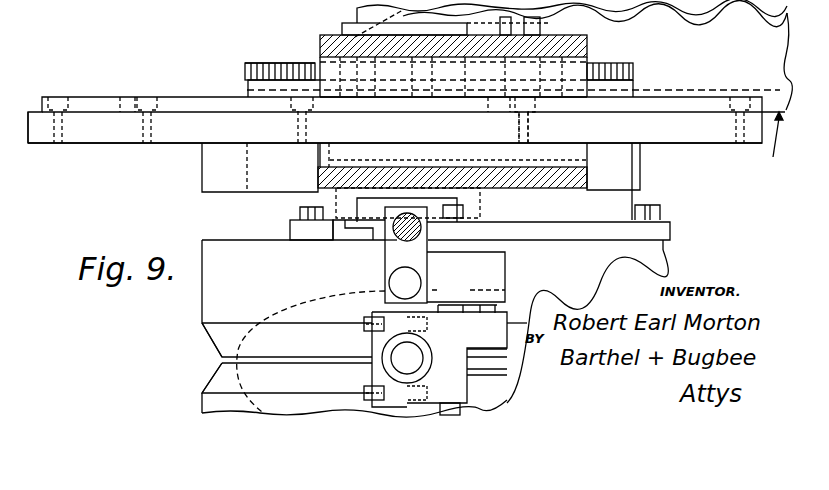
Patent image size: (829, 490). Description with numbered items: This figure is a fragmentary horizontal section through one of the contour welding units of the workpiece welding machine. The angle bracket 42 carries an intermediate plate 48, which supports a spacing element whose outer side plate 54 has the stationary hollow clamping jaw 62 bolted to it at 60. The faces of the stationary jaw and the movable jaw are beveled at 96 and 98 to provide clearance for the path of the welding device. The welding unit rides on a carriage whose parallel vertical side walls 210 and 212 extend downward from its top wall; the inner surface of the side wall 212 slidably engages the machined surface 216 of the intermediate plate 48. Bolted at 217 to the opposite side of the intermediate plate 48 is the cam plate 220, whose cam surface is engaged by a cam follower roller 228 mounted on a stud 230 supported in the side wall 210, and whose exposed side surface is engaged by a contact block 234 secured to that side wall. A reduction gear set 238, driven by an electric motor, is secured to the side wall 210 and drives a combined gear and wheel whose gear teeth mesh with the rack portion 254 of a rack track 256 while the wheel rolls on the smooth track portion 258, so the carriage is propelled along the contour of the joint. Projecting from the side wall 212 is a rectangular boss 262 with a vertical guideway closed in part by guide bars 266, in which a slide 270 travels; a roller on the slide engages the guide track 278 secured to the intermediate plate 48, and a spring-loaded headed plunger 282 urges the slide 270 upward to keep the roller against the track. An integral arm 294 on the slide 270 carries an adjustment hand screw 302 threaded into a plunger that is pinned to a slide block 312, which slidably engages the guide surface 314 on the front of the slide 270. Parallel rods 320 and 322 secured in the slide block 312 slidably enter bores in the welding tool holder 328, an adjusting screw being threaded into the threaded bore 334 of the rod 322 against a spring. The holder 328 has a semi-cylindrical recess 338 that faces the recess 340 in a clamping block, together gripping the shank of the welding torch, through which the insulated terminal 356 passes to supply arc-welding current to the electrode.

The angle bracket 42 is at (770, 144).
The intermediate plate 48 is at (80, 143).
The outer side plate 54 is at (292, 229).
The bolts 60 is at (300, 210).
The stationary clamping jaw 62 is at (199, 307).
The bevel 96 is at (206, 345).
The bevel 98 is at (208, 382).
The carriage side wall 210 is at (590, 40).
The carriage side wall 212 is at (640, 175).
The machined surface 216 is at (135, 145).
The bolts 217 is at (150, 124).
The cam plate 220 is at (100, 97).
The cam follower roller 228 is at (558, 100).
The stud 230 is at (542, 22).
The contact block 234 is at (600, 66).
The reduction gear set 238 is at (360, 14).
The rack portion 254 is at (244, 69).
The rack track 256 is at (255, 63).
The track portion 258 is at (248, 87).
The rectangular boss 262 is at (333, 195).
The guide bars 266 is at (480, 229).
The slide 270 is at (444, 208).
The guide track 278 is at (205, 181).
The headed plunger 282 is at (410, 214).
The arm 294 is at (388, 258).
The adjustment hand screw 302 is at (422, 276).
The slide block 312 is at (505, 268).
The guide surface 314 is at (397, 246).
The rod 320 is at (500, 306).
The rod 322 is at (468, 296).
The welding tool holder 328 is at (470, 378).
The threaded bore 334 is at (372, 392).
The semi-cylindrical recess 338 is at (427, 348).
The semi-cylindrical recess 340 is at (382, 352).
The terminal 356 is at (407, 358).